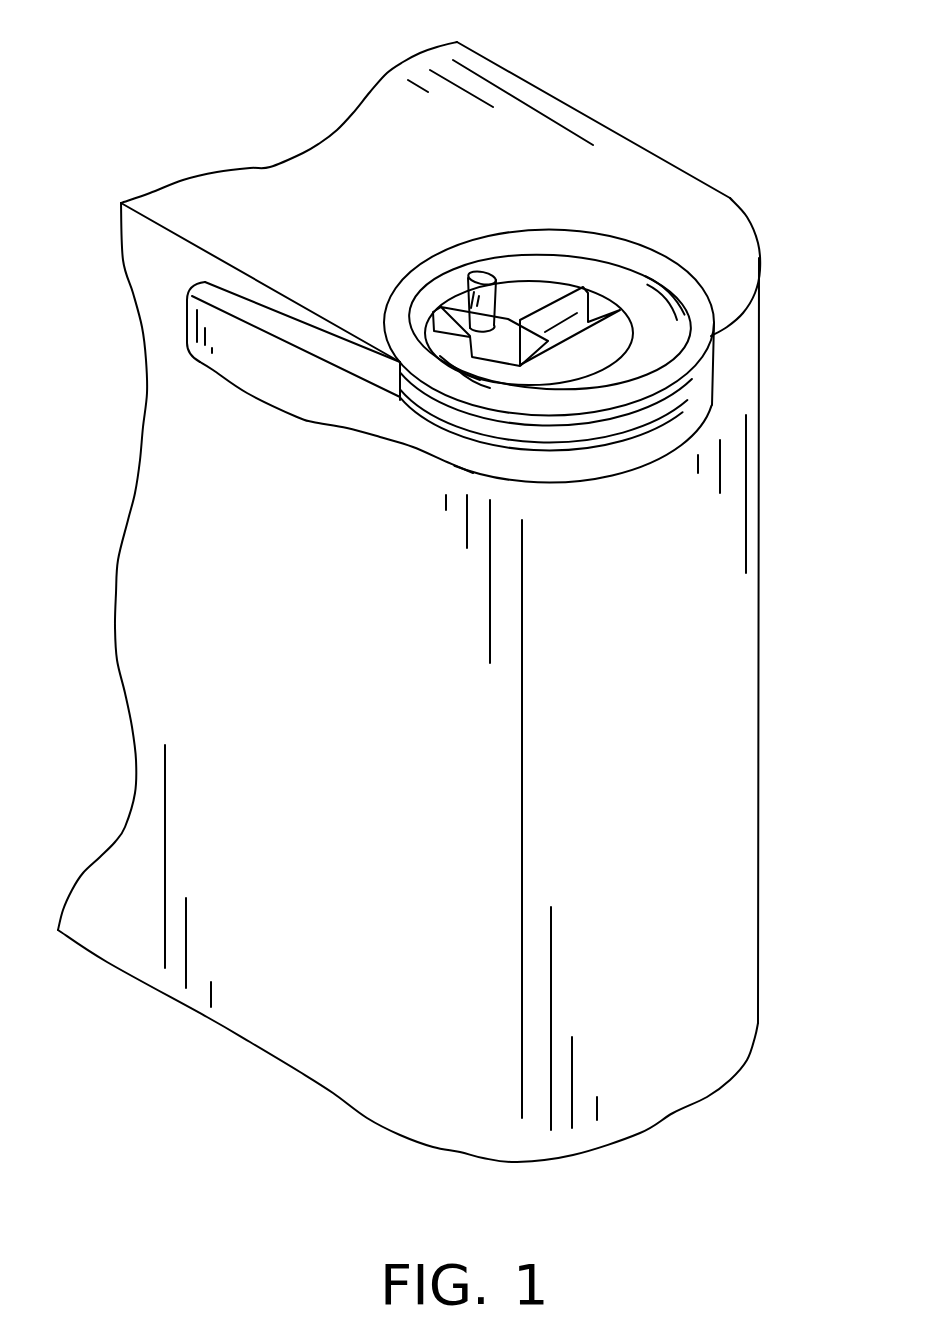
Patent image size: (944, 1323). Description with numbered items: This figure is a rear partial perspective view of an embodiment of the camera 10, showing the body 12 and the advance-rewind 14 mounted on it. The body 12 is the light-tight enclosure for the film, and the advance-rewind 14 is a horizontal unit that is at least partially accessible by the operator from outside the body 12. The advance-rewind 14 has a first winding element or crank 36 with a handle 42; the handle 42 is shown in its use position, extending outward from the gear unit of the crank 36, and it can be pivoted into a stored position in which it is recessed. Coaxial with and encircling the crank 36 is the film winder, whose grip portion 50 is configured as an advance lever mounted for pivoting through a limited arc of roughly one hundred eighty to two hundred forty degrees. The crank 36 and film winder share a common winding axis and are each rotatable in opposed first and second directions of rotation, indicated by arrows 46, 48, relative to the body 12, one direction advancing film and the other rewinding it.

The camera 10 is at (784, 71).
The body 12 is at (118, 600).
The advance-rewind 14 is at (643, 201).
The crank 36 is at (485, 272).
The handle 42 is at (526, 326).
The arrow indicating first direction of rotation 46 is at (450, 225).
The arrow indicating second direction of rotation 48 is at (650, 228).
The grip portion 50 is at (187, 310).